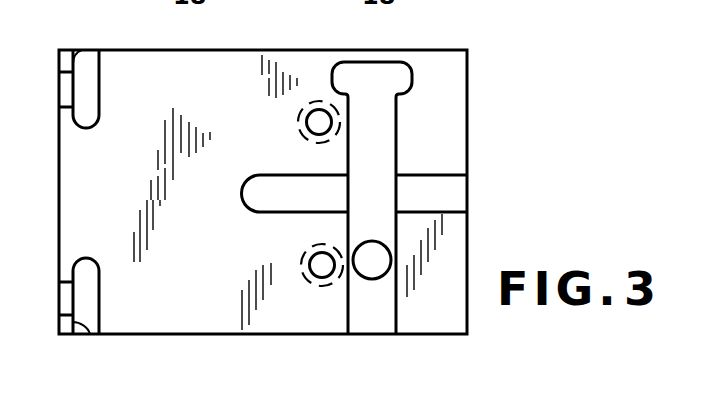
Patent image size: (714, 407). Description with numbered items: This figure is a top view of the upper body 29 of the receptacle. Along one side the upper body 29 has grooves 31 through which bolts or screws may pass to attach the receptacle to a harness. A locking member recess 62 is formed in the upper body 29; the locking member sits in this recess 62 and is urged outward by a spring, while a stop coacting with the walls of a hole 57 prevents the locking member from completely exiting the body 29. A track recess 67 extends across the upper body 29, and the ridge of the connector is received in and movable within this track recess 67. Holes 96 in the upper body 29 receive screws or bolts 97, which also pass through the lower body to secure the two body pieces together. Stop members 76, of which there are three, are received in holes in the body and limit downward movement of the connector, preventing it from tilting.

The upper body 29 is at (158, 50).
The grooves 31 is at (80, 50).
The locking member recess 62 is at (388, 124).
The track recess 67 is at (438, 178).
The hole 57 is at (372, 272).
The holes 96 is at (316, 101).
The screws or bolts 97 is at (298, 122).
The stop members 76 is at (280, 9).